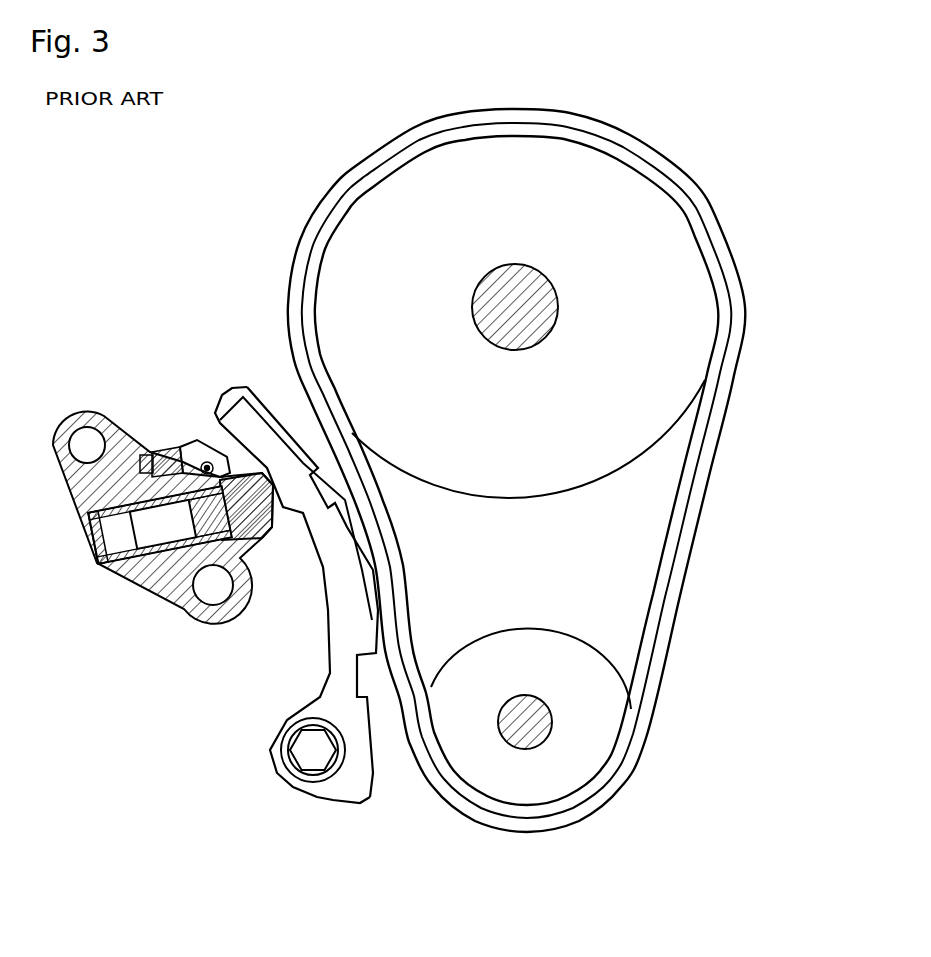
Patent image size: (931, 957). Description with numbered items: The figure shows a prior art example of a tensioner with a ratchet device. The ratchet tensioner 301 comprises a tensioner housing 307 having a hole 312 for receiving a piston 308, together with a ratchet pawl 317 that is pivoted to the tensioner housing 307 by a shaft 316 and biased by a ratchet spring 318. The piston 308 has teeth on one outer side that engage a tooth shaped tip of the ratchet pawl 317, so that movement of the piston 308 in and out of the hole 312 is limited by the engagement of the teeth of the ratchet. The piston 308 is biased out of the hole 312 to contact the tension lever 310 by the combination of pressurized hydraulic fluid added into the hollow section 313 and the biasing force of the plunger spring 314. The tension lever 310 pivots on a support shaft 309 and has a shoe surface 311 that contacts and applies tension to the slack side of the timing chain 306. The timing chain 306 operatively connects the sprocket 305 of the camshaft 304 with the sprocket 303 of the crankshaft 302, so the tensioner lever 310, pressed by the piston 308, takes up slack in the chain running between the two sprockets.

The ratchet tensioner 301 is at (157, 488).
The crankshaft 302 is at (548, 735).
The sprocket 303 is at (601, 725).
The camshaft 304 is at (558, 290).
The sprocket 305 is at (694, 296).
The timing chain 306 is at (731, 358).
The tensioner housing 307 is at (140, 590).
The piston 308 is at (268, 538).
The support shaft 309 is at (307, 757).
The tension lever 310 is at (360, 600).
The shoe surface 311 is at (375, 548).
The hole 312 is at (100, 563).
The hollow section 313 is at (157, 535).
The plunger spring 314 is at (72, 516).
The shaft 316 is at (208, 462).
The ratchet pawl 317 is at (186, 448).
The ratchet spring 318 is at (147, 452).